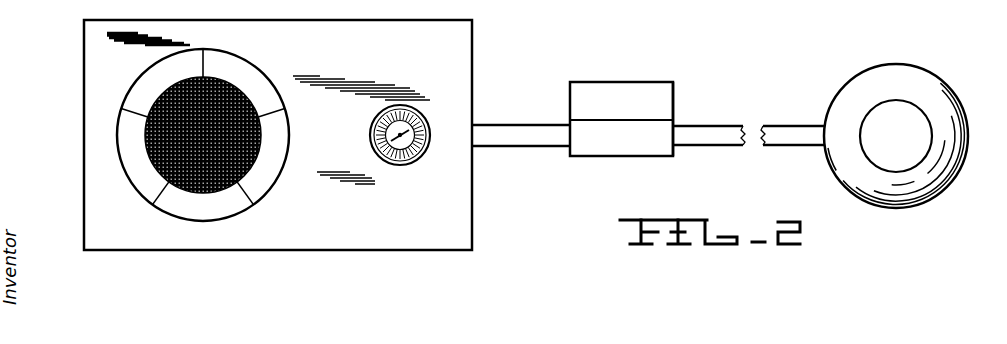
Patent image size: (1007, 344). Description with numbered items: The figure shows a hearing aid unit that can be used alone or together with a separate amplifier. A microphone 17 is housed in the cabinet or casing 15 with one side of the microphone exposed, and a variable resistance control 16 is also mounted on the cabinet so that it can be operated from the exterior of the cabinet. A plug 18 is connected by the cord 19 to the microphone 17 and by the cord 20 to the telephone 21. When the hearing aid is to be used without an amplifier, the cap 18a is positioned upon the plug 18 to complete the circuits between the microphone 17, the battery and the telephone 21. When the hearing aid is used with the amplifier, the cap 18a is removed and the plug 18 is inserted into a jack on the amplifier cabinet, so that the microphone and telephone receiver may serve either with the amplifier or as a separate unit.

The cabinet or casing 15 is at (474, 217).
The variable resistance control 16 is at (372, 136).
The microphone 17 is at (257, 157).
The plug 18 is at (645, 153).
The cap 18a is at (676, 93).
The cord 19 is at (530, 148).
The cord 20 is at (727, 126).
The telephone 21 is at (836, 157).